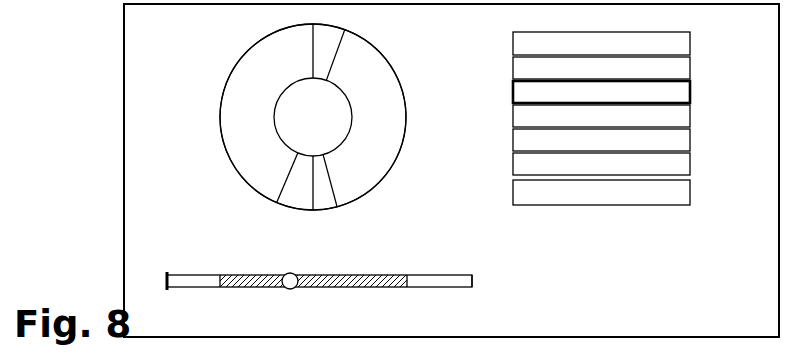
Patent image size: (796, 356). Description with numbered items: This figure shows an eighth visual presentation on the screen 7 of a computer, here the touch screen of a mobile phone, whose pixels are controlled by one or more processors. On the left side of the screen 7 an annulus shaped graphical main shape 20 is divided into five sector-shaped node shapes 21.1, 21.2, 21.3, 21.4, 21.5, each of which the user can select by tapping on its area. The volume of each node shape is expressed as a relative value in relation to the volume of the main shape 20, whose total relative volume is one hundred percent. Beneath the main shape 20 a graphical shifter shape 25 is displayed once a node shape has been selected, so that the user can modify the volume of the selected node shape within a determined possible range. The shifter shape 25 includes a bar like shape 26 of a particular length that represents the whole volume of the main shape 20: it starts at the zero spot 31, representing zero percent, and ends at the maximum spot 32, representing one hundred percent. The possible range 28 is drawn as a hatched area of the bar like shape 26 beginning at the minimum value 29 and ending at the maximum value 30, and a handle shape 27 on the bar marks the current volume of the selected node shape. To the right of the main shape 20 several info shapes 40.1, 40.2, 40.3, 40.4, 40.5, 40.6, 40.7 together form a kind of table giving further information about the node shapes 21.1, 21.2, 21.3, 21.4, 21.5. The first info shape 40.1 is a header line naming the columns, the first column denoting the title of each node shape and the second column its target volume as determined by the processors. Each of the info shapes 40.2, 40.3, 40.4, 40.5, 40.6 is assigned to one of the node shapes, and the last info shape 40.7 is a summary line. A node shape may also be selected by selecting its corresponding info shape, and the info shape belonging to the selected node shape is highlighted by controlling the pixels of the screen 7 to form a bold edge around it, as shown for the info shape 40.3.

The screen 7 is at (451, 170).
The graphical main shape 20 is at (227, 153).
The node shape 21.1 is at (246, 99).
The node shape 21.2 is at (326, 38).
The node shape 21.3 is at (385, 92).
The node shape 21.4 is at (324, 177).
The node shape 21.5 is at (297, 189).
The first info shape 40.1 is at (690, 44).
The info shape 40.2 is at (690, 68).
The info shape 40.3 is at (690, 92).
The info shape 40.4 is at (690, 116).
The info shape 40.5 is at (690, 140).
The info shape 40.6 is at (690, 164).
The last info shape 40.7 is at (690, 193).
The graphical shifter shape 25 is at (362, 282).
The bar like shape 26 is at (198, 275).
The handle shape 27 is at (296, 289).
The possible range 28 is at (341, 275).
The minimum value 29 is at (222, 288).
The maximum value 30 is at (409, 288).
The zero spot 31 is at (168, 289).
The maximum spot 32 is at (473, 283).